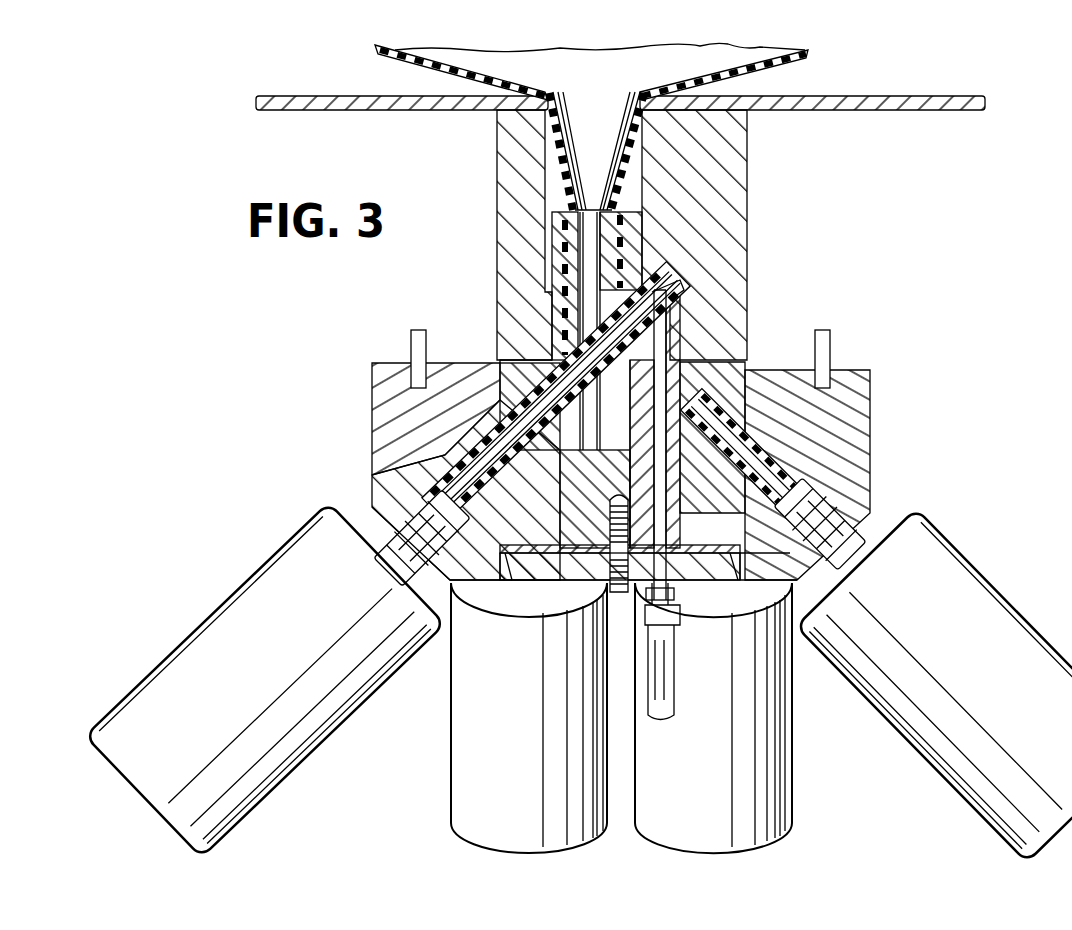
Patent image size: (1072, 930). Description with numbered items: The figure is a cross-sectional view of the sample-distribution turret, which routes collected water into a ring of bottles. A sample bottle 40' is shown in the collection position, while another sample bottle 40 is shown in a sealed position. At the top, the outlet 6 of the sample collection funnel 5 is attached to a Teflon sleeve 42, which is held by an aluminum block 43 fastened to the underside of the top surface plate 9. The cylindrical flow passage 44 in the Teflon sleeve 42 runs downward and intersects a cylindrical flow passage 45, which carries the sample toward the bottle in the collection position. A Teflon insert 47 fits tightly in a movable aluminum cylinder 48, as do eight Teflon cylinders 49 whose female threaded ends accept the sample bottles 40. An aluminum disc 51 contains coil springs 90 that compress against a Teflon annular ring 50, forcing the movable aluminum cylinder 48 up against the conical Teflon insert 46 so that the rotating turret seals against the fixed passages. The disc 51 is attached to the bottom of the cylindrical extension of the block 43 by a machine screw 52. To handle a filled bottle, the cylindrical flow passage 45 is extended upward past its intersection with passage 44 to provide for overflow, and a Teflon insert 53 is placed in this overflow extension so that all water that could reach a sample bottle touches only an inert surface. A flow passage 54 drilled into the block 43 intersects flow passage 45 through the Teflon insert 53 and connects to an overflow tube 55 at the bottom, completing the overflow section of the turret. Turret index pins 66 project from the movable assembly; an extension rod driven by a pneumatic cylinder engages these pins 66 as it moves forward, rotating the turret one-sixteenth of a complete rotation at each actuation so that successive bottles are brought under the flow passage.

The sample collection funnel 5 is at (714, 50).
The top surface plate 9 is at (870, 96).
The outlet 6 is at (547, 130).
The Teflon sleeve 42 is at (545, 192).
The aluminum block 43 is at (747, 210).
The cylindrical flow passage 44 is at (580, 242).
The cylindrical flow passage 45 is at (410, 456).
The conical Teflon insert 46 is at (525, 345).
The Teflon insert 47 is at (745, 372).
The movable aluminum cylinder 48 is at (872, 385).
The Teflon cylinders 49 is at (845, 480).
The Teflon annular ring 50 is at (722, 580).
The aluminum disc 51 is at (548, 577).
The machine screw 52 is at (606, 590).
The Teflon insert 53 is at (680, 290).
The flow passage 54 is at (668, 332).
The overflow tube 55 is at (668, 655).
The turret index pins 66 is at (411, 345).
The coil springs 90 is at (510, 578).
The sample bottle 40 is at (761, 687).
The sample bottle 40' is at (265, 680).